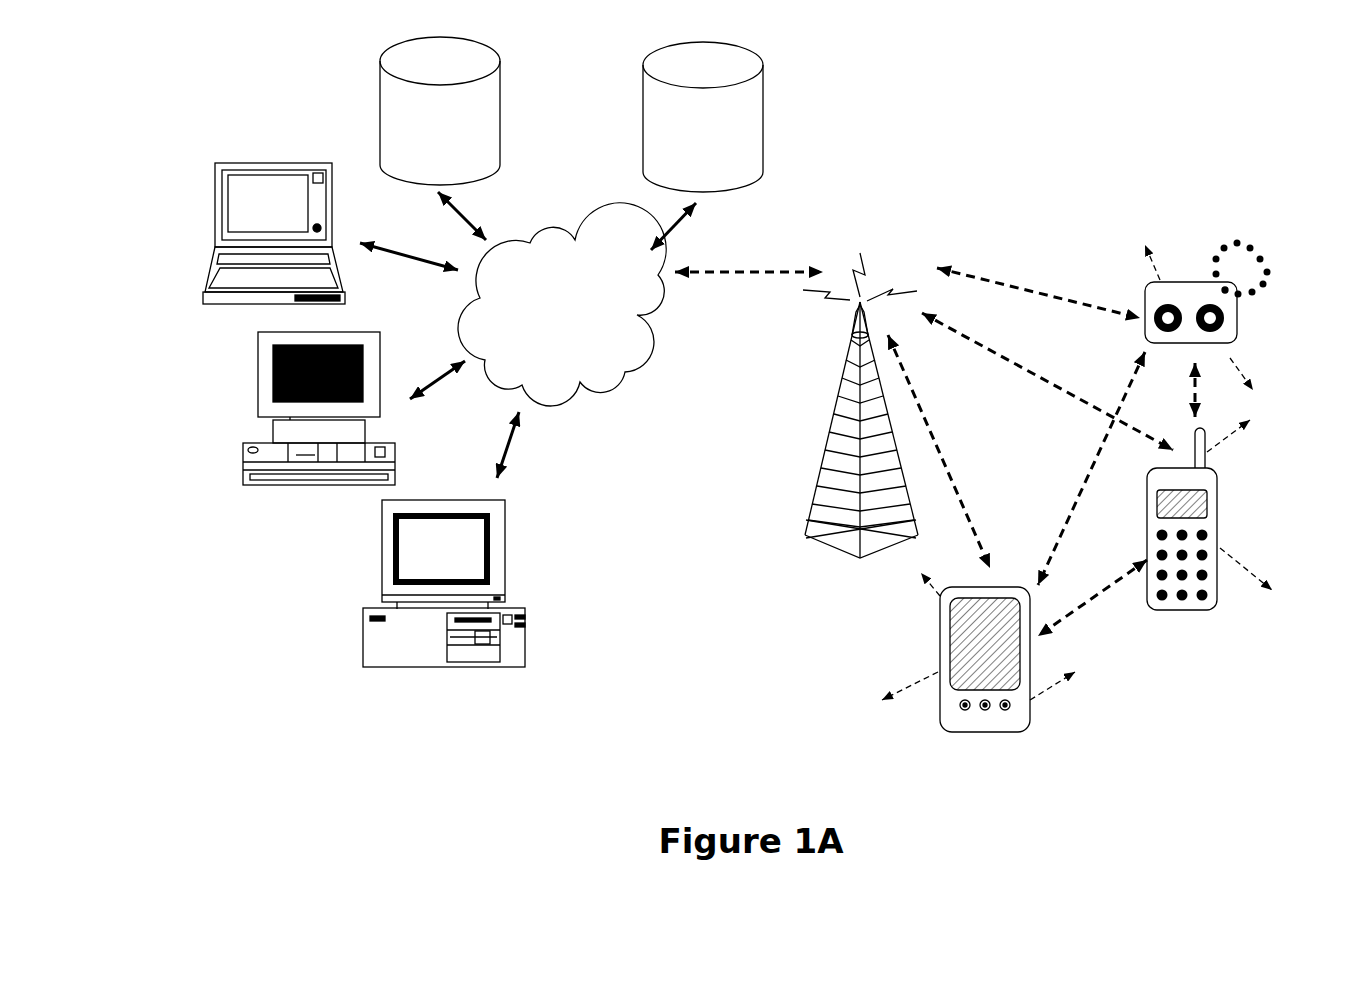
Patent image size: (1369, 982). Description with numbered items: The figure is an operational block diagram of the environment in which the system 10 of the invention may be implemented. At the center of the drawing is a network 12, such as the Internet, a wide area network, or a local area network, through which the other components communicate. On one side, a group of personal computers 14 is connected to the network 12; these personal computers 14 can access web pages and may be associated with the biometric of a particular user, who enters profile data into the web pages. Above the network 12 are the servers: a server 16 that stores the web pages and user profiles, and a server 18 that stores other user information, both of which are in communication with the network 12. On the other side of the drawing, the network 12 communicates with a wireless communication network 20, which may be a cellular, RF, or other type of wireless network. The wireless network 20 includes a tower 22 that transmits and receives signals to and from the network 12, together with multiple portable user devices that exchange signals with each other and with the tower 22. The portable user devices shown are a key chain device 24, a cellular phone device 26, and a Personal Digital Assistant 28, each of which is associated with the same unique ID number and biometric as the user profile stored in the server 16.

The system 10 is at (742, 424).
The network 12 is at (655, 353).
The personal computer 14 is at (349, 421).
The server 16 is at (766, 113).
The server 18 is at (505, 102).
The wireless communication network 20 is at (1034, 477).
The tower 22 is at (813, 468).
The key chain device 24 is at (1245, 321).
The cellular phone device 26 is at (1187, 620).
The Personal Digital Assistant (PDA) 28 is at (989, 740).